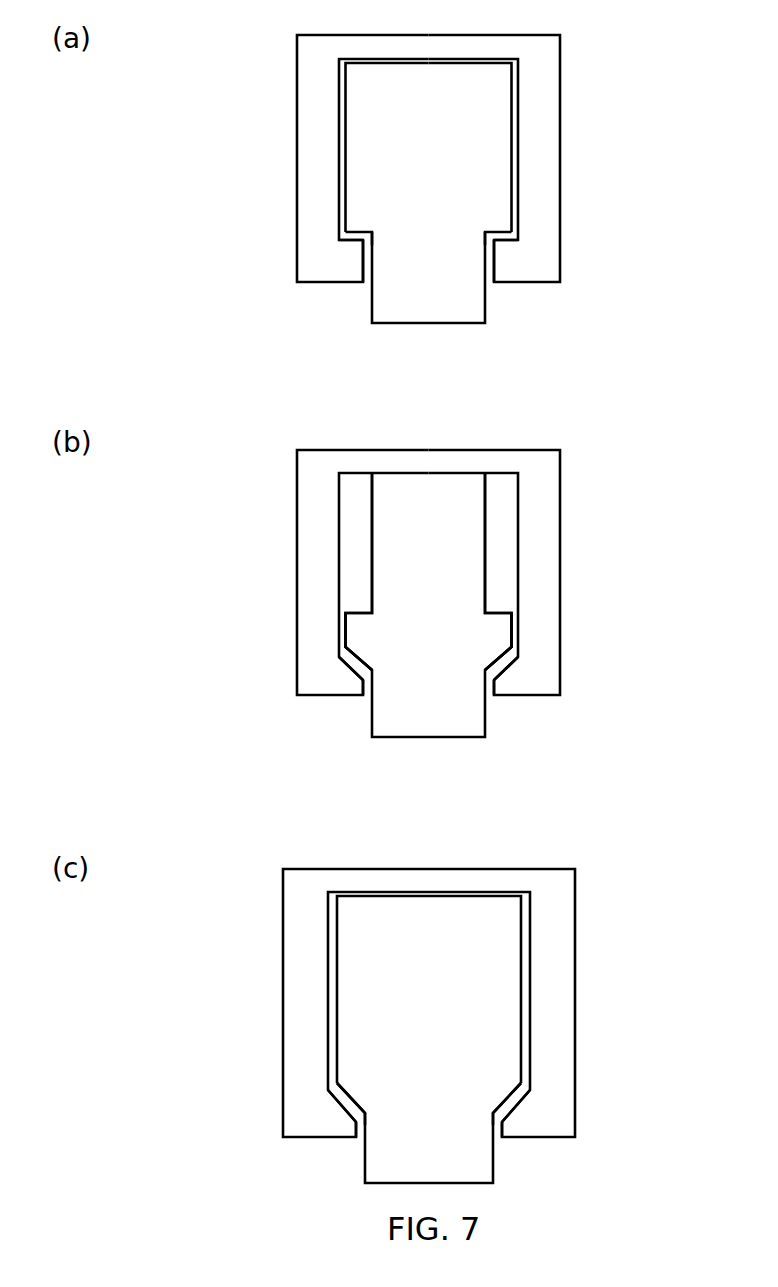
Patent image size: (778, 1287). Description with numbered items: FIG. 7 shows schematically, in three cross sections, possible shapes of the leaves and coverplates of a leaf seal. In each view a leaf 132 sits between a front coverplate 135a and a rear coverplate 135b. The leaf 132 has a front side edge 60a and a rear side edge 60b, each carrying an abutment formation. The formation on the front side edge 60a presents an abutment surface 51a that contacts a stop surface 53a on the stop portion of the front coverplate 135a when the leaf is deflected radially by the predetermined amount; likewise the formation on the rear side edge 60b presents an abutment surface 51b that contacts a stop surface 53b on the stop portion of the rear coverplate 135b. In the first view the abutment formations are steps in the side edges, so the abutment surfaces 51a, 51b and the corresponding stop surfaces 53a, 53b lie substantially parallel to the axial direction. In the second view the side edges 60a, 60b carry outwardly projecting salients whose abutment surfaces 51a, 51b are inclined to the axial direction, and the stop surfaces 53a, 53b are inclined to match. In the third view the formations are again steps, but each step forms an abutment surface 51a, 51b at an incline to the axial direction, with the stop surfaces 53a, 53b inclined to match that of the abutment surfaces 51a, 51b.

The leaf 132 is at (407, 185).
The front side edge 60a is at (337, 108).
The rear side edge 60b is at (514, 110).
The front coverplate 135a is at (313, 156).
The rear coverplate 135b is at (540, 157).
The abutment surface 51a is at (358, 231).
The abutment surface 51b is at (499, 231).
The stop surface 53a is at (356, 241).
The stop surface 53b is at (502, 242).